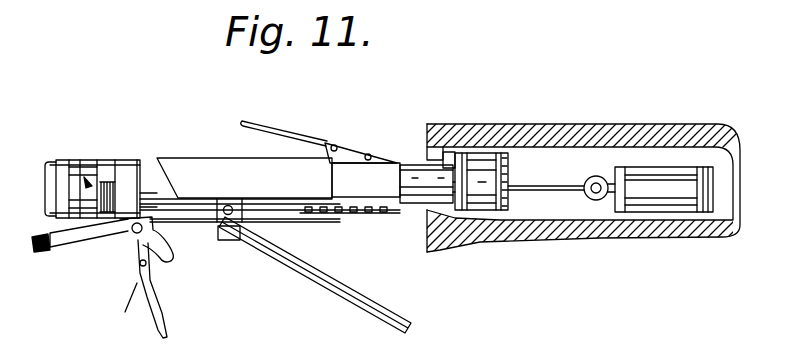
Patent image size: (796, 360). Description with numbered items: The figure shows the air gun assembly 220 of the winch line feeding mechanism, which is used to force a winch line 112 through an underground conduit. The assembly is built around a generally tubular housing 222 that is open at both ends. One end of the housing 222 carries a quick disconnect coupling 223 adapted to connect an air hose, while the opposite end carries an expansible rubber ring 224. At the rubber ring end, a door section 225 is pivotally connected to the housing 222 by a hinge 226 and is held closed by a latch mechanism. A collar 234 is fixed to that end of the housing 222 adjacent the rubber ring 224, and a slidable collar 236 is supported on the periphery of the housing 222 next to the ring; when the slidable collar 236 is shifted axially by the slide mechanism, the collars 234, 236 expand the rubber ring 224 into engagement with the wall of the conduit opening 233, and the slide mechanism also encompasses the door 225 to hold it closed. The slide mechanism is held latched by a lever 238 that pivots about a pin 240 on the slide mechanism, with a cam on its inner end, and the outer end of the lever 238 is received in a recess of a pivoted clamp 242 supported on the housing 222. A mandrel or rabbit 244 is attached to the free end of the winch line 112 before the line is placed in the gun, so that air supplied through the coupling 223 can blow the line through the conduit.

The air gun assembly 220 is at (134, 118).
The quick disconnect coupling 223 is at (59, 160).
The tubular housing 222 is at (142, 168).
The door section 225 is at (343, 173).
The slidable collar 236 is at (430, 150).
The conduit opening 233 is at (597, 147).
The collar 234 is at (575, 150).
The expansible rubber ring 224 is at (487, 150).
The winch line 112 is at (545, 190).
The mandrel or rabbit 244 is at (662, 212).
The pivoted clamp 242 is at (127, 240).
The pin 240 is at (222, 215).
The lever 238 is at (383, 318).
The hinge 226 is at (363, 217).